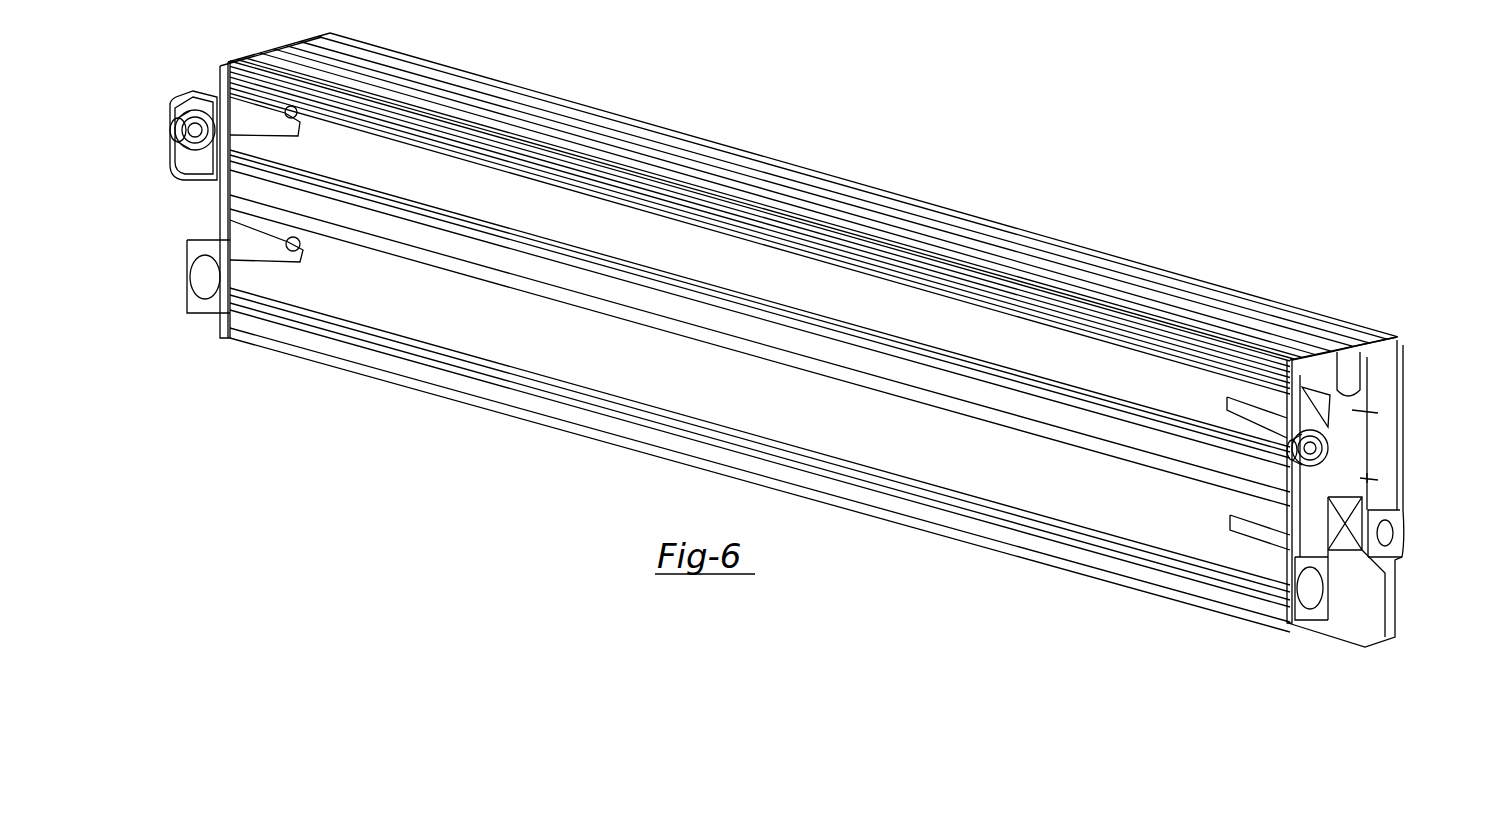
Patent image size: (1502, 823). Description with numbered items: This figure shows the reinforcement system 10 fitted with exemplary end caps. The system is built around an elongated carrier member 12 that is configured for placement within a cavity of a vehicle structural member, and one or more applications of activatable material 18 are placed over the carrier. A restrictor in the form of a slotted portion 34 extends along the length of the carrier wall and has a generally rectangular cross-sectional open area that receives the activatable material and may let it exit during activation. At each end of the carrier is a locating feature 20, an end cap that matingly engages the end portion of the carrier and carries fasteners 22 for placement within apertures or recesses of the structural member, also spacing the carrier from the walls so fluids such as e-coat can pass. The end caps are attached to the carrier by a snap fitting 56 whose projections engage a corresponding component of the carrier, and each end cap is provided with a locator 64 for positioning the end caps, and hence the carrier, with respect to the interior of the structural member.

The reinforcement system 10 is at (873, 125).
The carrier member 12 is at (641, 118).
The activatable material 18 is at (1330, 325).
The locating feature 20 is at (1397, 603).
The fastener 22 is at (172, 133).
The slotted portion 34 is at (1167, 335).
The snap fitting 56 is at (215, 97).
The locator 64 is at (192, 180).